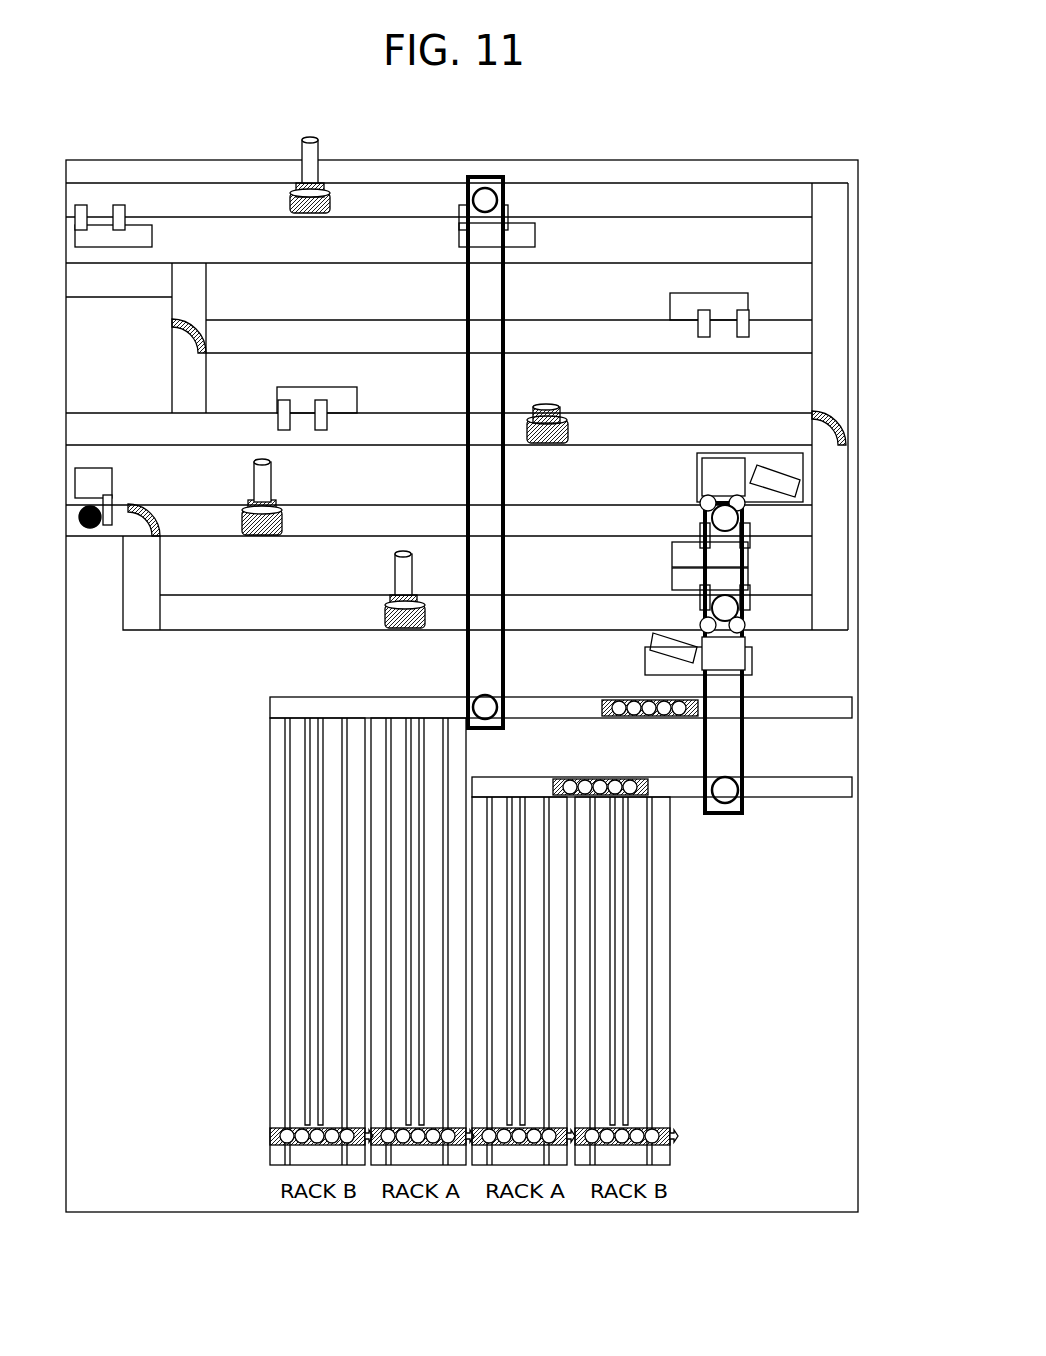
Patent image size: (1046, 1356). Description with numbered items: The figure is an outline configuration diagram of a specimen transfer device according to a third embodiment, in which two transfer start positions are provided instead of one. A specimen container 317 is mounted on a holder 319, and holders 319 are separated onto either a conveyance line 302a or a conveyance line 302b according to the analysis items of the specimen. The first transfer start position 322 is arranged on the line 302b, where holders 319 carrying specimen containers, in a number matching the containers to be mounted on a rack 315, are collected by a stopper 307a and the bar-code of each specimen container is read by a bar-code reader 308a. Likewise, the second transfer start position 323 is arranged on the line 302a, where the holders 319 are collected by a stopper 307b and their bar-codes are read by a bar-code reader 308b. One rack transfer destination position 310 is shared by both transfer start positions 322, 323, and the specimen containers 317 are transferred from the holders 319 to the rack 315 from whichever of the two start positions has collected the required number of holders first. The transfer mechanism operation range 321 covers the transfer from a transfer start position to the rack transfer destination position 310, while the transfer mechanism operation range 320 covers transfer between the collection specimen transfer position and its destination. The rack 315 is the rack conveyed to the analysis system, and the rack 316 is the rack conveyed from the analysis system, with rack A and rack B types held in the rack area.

The transfer mechanism operation range 320 is at (506, 290).
The transfer mechanism operation range 321 is at (723, 775).
The holder 319 is at (241, 527).
The specimen container 317 is at (275, 475).
The conveyance line 302b is at (383, 517).
The conveyance line 302a is at (196, 632).
The bar-code reader 308a is at (701, 503).
The bar-code reader 308b is at (748, 630).
The stopper 307a is at (672, 555).
The stopper 307b is at (672, 586).
The first transfer start position 322 is at (728, 520).
The second transfer start position 323 is at (728, 610).
The rack 316 is at (630, 697).
The rack 315 is at (606, 777).
The rack transfer destination position 310 is at (736, 792).